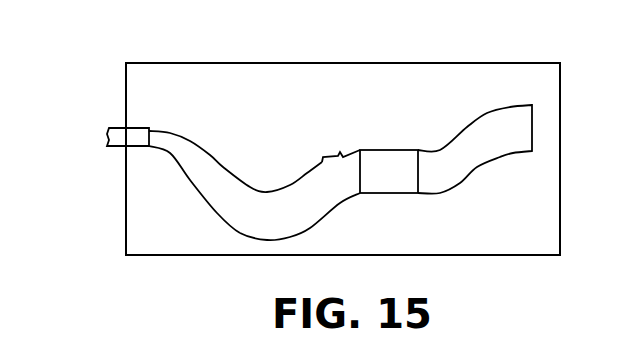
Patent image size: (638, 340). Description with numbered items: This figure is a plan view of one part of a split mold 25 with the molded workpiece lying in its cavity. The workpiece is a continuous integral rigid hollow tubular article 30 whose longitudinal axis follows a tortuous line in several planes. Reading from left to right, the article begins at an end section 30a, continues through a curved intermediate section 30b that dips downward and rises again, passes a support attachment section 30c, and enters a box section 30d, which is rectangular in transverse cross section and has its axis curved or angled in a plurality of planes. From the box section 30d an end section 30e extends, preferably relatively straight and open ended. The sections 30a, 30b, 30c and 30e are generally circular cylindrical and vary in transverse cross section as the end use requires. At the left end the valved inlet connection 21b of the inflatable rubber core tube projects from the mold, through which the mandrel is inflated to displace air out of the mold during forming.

The split mold 25 is at (505, 235).
The valved inlet connection 21b is at (116, 141).
The continuous integral rigid hollow tubular article 30 is at (339, 157).
The end section 30a is at (163, 135).
The curved intermediate section 30b is at (290, 218).
The support attachment section 30c is at (338, 158).
The box section 30d is at (383, 153).
The end section 30e is at (502, 130).